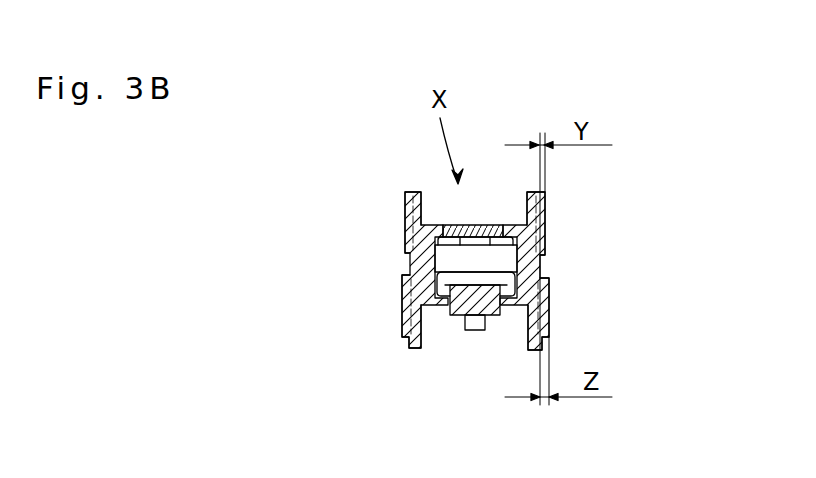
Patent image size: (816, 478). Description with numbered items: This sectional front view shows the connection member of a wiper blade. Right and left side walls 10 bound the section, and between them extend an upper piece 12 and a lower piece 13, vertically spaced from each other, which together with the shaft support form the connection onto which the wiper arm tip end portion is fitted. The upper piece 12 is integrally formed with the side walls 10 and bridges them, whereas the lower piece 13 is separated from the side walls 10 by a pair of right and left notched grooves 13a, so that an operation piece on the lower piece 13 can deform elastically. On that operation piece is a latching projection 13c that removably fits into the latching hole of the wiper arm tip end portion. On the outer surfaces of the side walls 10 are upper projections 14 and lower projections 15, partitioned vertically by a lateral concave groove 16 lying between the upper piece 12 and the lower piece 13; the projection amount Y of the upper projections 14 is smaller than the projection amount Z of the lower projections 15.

The right and left side walls 10 is at (415, 192).
The upper piece 12 is at (477, 226).
The lower piece 13 is at (482, 330).
The notched grooves 13a is at (448, 296).
The latching projection 13c is at (478, 328).
The upper projections 14 is at (406, 220).
The lower projections 15 is at (400, 303).
The lateral concave groove 16 is at (545, 268).